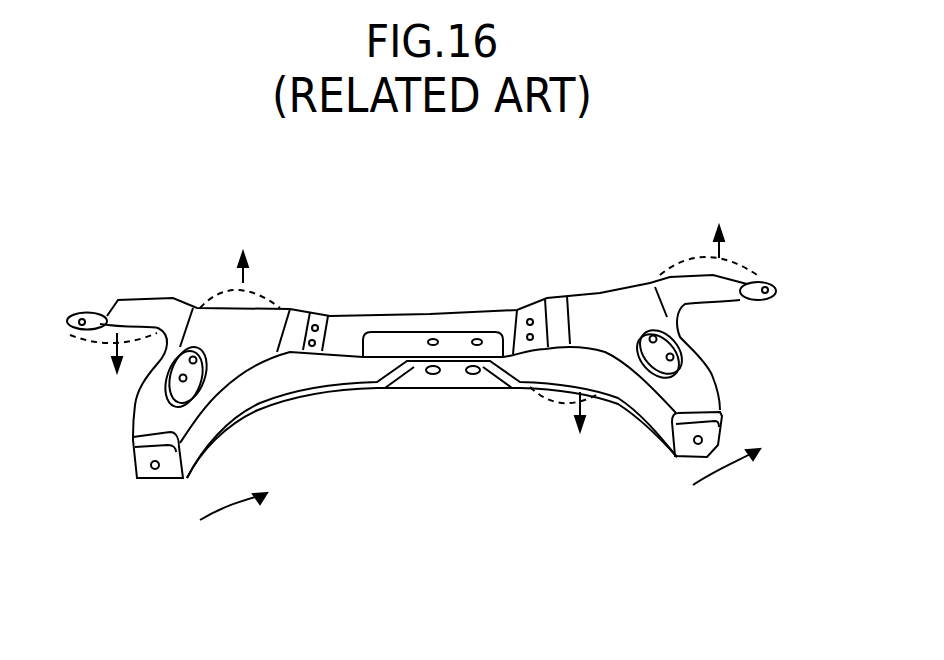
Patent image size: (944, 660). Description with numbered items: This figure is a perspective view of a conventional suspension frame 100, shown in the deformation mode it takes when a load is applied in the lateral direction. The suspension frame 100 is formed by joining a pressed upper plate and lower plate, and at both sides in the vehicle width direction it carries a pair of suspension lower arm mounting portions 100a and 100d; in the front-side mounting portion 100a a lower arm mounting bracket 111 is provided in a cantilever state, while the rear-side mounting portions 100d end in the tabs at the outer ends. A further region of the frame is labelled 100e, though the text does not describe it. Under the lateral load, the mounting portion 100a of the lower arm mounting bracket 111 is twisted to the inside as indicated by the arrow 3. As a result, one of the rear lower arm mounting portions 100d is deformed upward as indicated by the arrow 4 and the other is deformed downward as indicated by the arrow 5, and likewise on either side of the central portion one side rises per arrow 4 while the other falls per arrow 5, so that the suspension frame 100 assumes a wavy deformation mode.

The suspension frame 100 is at (592, 317).
The suspension lower arm mounting portion 100a is at (133, 440).
The suspension lower arm mounting portion 100d is at (142, 290).
The upper surface reinforcing portion 100e is at (257, 332).
The lower arm mounting bracket 111 is at (167, 480).
The arrow 3 is at (243, 513).
The arrow 4 is at (237, 263).
The arrow 5 is at (110, 345).